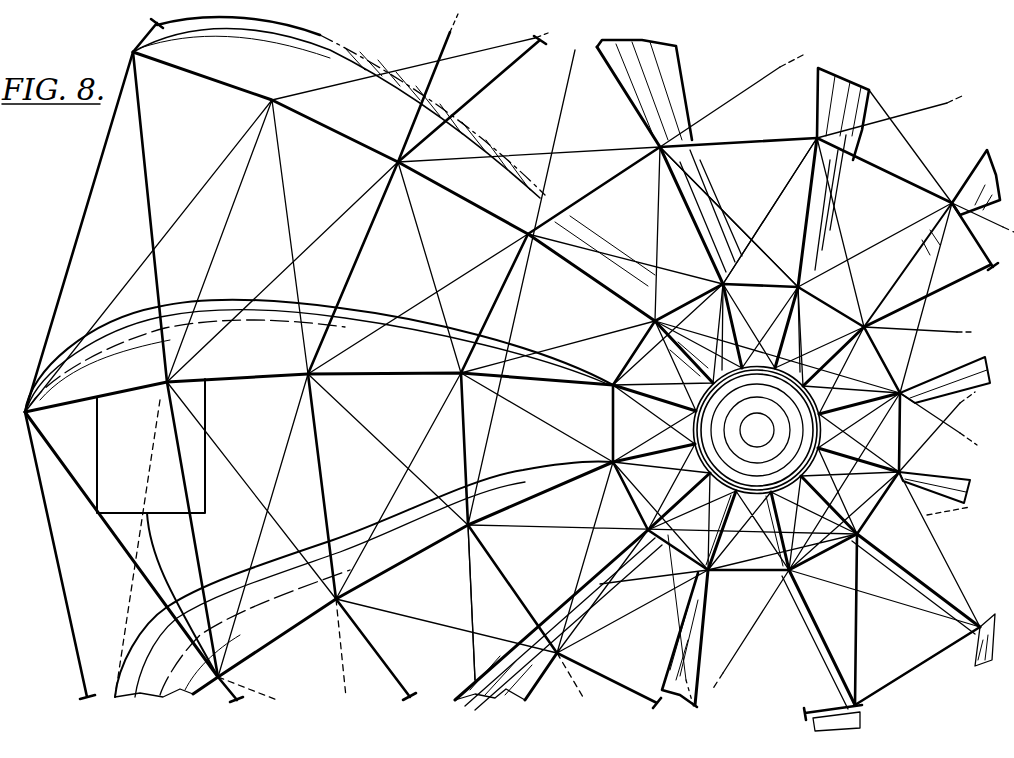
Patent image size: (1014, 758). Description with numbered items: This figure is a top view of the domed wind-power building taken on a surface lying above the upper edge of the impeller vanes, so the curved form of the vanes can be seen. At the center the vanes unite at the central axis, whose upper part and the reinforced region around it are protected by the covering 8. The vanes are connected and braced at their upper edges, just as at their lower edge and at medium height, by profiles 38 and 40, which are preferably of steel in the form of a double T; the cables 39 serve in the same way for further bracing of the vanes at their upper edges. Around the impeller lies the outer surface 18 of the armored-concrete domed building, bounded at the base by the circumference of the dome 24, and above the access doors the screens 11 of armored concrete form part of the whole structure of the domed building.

The covering 8 is at (763, 432).
The screens 11 is at (113, 437).
The outer surface 18 is at (188, 220).
The circumference of the dome 24 is at (173, 617).
The profile 38 is at (100, 160).
The cables 39 is at (150, 248).
The profile 40 is at (617, 173).